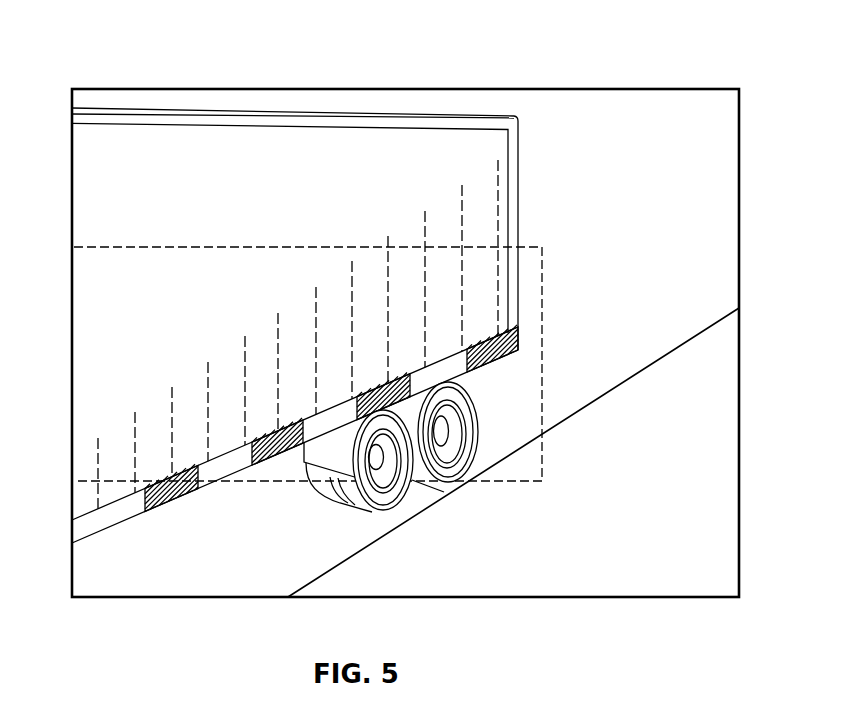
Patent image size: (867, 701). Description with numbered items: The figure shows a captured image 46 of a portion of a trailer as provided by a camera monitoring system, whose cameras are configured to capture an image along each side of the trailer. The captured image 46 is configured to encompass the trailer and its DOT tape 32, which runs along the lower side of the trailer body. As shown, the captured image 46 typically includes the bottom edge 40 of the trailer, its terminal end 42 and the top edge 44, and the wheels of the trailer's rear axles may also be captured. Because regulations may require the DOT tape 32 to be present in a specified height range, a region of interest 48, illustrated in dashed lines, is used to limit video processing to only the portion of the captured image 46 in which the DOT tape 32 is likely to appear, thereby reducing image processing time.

The DOT tape 32 is at (131, 486).
The bottom edge 40 is at (224, 478).
The terminal end 42 is at (520, 233).
The top edge 44 is at (305, 112).
The captured image 46 is at (752, 220).
The region of interest 48 is at (542, 357).